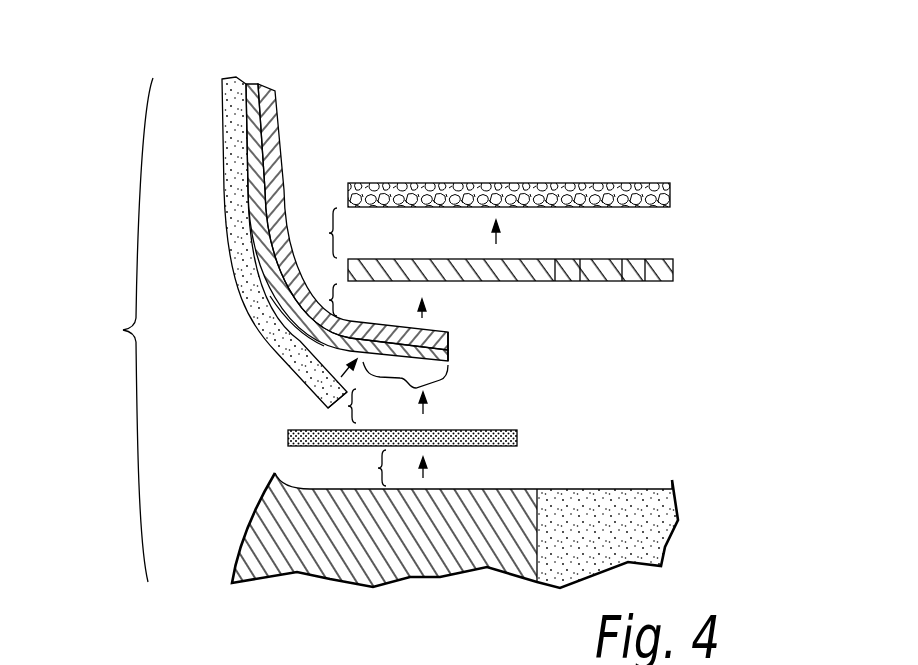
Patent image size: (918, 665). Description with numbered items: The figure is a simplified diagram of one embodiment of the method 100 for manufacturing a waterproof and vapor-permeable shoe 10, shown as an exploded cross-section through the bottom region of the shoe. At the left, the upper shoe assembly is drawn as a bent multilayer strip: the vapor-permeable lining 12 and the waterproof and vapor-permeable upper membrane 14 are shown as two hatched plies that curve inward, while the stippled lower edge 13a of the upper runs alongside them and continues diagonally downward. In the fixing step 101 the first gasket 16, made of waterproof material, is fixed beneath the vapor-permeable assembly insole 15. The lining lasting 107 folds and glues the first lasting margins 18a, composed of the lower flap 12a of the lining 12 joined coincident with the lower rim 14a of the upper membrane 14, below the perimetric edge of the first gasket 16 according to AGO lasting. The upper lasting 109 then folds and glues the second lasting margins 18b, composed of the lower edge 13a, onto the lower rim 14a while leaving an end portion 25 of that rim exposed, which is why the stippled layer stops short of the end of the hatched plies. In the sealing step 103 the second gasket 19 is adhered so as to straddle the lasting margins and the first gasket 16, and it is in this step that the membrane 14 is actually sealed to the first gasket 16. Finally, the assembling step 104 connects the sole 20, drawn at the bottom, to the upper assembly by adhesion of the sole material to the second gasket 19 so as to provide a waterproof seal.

The waterproof and vapor-permeable shoe 10 is at (120, 330).
The vapor-permeable lining 12 is at (290, 213).
The lower flap of the lining 12a is at (449, 345).
The lower edge of the upper 13a is at (313, 399).
The waterproof and vapor-permeable upper membrane 14 is at (275, 167).
The lower rim of the upper membrane 14a is at (449, 362).
The vapor-permeable assembly insole 15 is at (596, 171).
The first gasket 16 is at (667, 249).
The first lasting margins 18a is at (455, 352).
The second lasting margins 18b is at (310, 403).
The second gasket 19 is at (519, 437).
The sole 20 is at (242, 513).
The end portion 25 is at (416, 388).
The method for manufacturing a waterproof and vapor-permeable shoe 100 is at (677, 150).
The fixing 101 is at (502, 240).
The sealing 103 is at (418, 410).
The assembling 104 is at (430, 478).
The lining lasting 107 is at (430, 319).
The upper lasting 109 is at (336, 366).